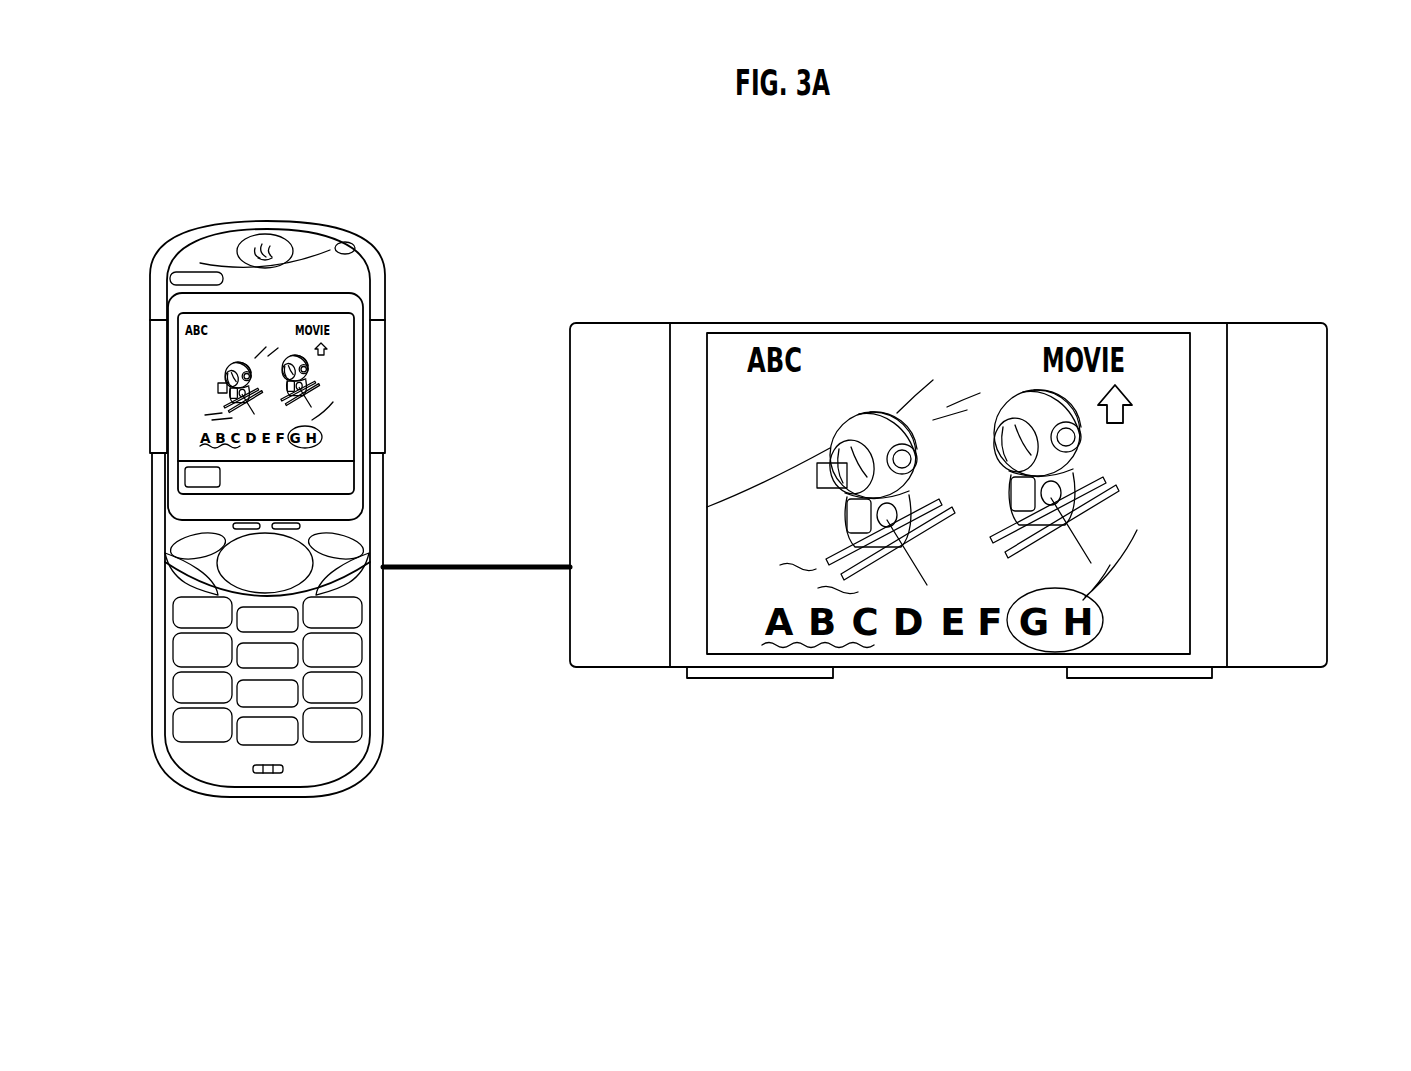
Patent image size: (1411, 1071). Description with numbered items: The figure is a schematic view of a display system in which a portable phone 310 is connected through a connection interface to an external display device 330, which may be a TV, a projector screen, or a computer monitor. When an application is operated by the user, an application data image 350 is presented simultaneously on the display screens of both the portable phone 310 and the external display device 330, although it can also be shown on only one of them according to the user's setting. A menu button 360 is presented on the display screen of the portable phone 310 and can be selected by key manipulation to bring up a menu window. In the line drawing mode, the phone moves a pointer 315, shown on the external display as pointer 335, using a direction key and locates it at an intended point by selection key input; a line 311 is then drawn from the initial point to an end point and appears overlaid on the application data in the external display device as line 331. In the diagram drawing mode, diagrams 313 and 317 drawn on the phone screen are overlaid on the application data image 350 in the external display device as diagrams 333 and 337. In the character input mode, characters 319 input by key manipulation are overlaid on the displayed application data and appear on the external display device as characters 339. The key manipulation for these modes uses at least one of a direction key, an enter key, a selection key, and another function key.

The portable phone 310 is at (362, 238).
The line 311 is at (200, 446).
The diagram 313 is at (218, 387).
The pointer 315 is at (327, 347).
The diagram 317 is at (322, 433).
The characters 319 is at (268, 324).
The external display device 330 is at (1138, 324).
The line 331 is at (797, 646).
The diagram 333 is at (817, 470).
The pointer 335 is at (1127, 412).
The diagram 337 is at (1102, 622).
The characters 339 is at (953, 343).
The application data image 350 is at (222, 362).
The menu button 360 is at (185, 477).